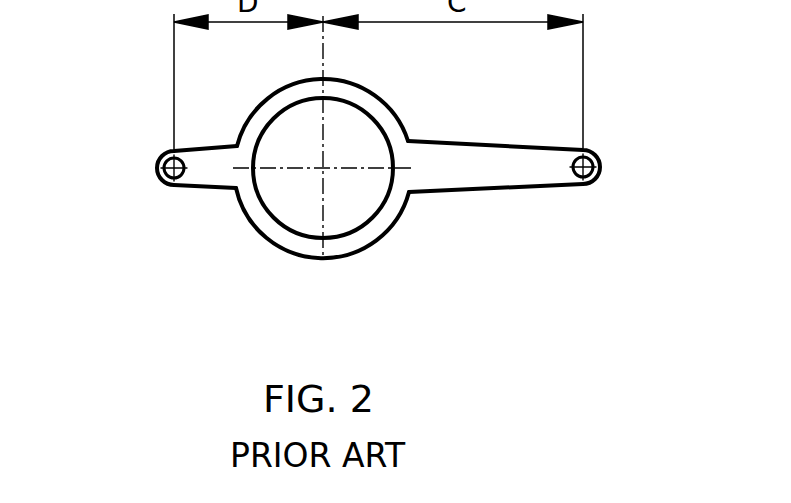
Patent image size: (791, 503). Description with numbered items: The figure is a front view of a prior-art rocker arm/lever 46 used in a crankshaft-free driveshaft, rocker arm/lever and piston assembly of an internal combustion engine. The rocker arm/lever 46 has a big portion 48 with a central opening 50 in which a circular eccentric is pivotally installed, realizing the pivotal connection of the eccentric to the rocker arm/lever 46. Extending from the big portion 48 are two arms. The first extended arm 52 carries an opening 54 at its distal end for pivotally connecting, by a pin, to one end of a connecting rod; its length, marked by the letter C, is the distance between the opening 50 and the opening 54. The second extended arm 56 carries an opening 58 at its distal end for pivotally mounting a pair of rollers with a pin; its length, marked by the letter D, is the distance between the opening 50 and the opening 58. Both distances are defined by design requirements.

The rocker arm/lever 46 is at (379, 232).
The big portion 48 is at (311, 219).
The opening 50 is at (335, 190).
The extended arm 52 is at (565, 202).
The opening 54 is at (597, 178).
The extended arm 56 is at (136, 222).
The opening 58 is at (157, 175).